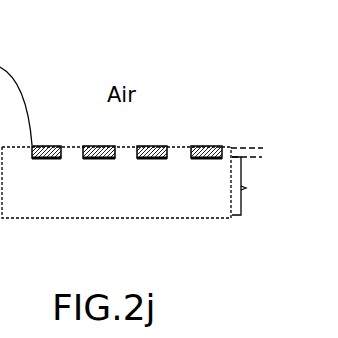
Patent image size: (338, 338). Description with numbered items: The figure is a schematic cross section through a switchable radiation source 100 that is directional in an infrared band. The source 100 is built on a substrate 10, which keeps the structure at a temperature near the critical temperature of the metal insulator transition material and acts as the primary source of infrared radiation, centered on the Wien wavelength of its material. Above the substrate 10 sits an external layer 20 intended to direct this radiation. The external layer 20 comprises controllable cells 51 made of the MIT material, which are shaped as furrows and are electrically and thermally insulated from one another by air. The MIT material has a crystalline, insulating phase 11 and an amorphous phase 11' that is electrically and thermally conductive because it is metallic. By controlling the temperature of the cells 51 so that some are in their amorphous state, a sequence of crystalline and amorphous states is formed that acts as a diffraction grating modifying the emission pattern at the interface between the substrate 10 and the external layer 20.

The switchable radiation source 100 is at (196, 74).
The substrate 10 is at (256, 186).
The crystalline insulating phase of the MIT material 11 is at (116, 211).
The amorphous metallic phase of the MIT material 11' is at (116, 111).
The controllable cells 51 is at (148, 143).
The external layer 20 is at (262, 152).